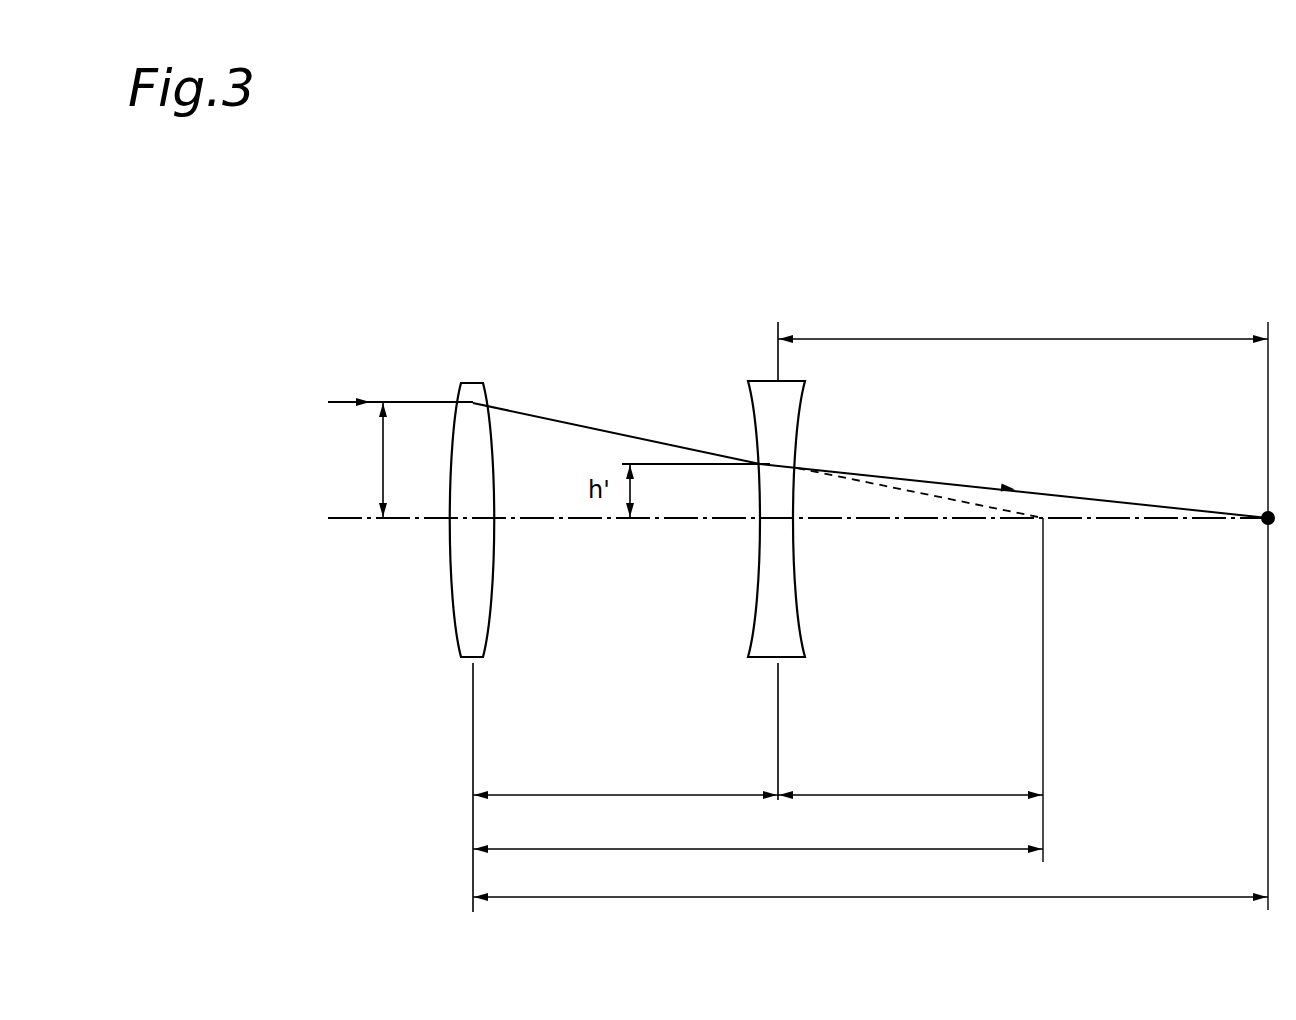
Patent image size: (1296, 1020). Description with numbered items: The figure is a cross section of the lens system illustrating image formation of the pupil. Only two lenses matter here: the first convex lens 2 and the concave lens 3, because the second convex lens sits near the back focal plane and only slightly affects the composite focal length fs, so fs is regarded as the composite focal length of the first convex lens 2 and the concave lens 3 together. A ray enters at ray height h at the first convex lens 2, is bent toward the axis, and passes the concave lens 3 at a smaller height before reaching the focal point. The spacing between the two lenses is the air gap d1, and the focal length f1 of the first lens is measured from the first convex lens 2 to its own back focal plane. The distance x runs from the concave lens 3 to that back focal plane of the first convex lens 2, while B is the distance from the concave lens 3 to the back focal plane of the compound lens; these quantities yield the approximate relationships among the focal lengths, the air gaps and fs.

The first convex lens 2 is at (470, 383).
The concave lens 3 is at (752, 381).
The ray height at first convex lens h is at (366, 460).
The distance between concave lens and back focal plane of compound lens B is at (1023, 607).
The distance between concave lens and back focal plane of first convex lens x is at (910, 690).
The air gap d1 is at (625, 776).
The focal length of first lens f1 is at (758, 831).
The composite focal length fs is at (870, 880).